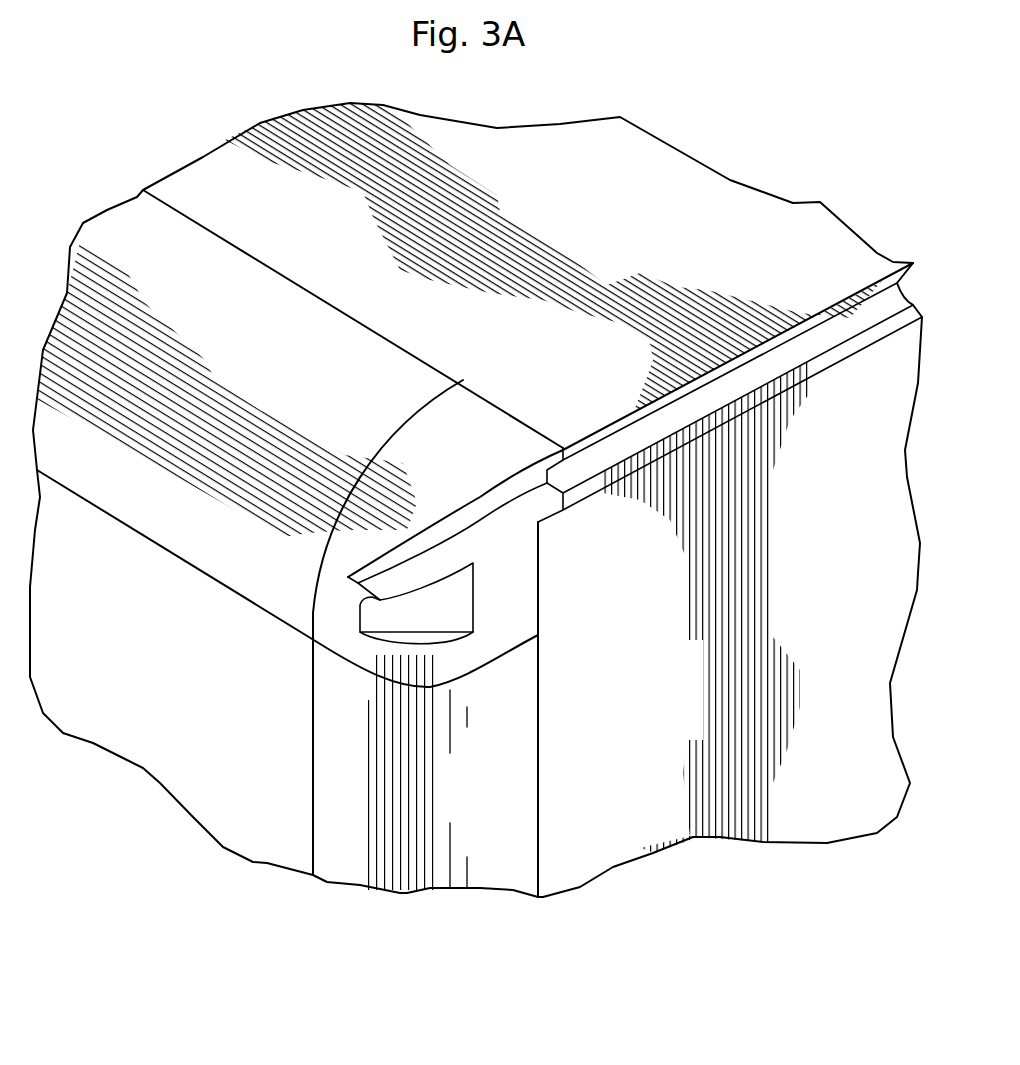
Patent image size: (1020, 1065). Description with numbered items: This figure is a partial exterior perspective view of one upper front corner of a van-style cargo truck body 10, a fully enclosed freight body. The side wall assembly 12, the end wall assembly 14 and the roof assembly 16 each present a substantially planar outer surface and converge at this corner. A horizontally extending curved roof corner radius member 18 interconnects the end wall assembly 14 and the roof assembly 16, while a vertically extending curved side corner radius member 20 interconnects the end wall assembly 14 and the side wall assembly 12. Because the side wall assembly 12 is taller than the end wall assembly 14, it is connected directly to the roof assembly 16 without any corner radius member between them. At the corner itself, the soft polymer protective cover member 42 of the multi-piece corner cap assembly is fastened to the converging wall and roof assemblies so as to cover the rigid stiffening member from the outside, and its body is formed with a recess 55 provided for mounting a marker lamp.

The van-style cargo truck body 10 is at (666, 108).
The side wall assembly 12 is at (606, 846).
The end wall assembly 14 is at (163, 744).
The roof assembly 16 is at (738, 216).
The roof corner radius member 18 is at (130, 508).
The side corner radius member 20 is at (498, 860).
The protective cover member 42 is at (487, 450).
The recess 55 is at (387, 617).